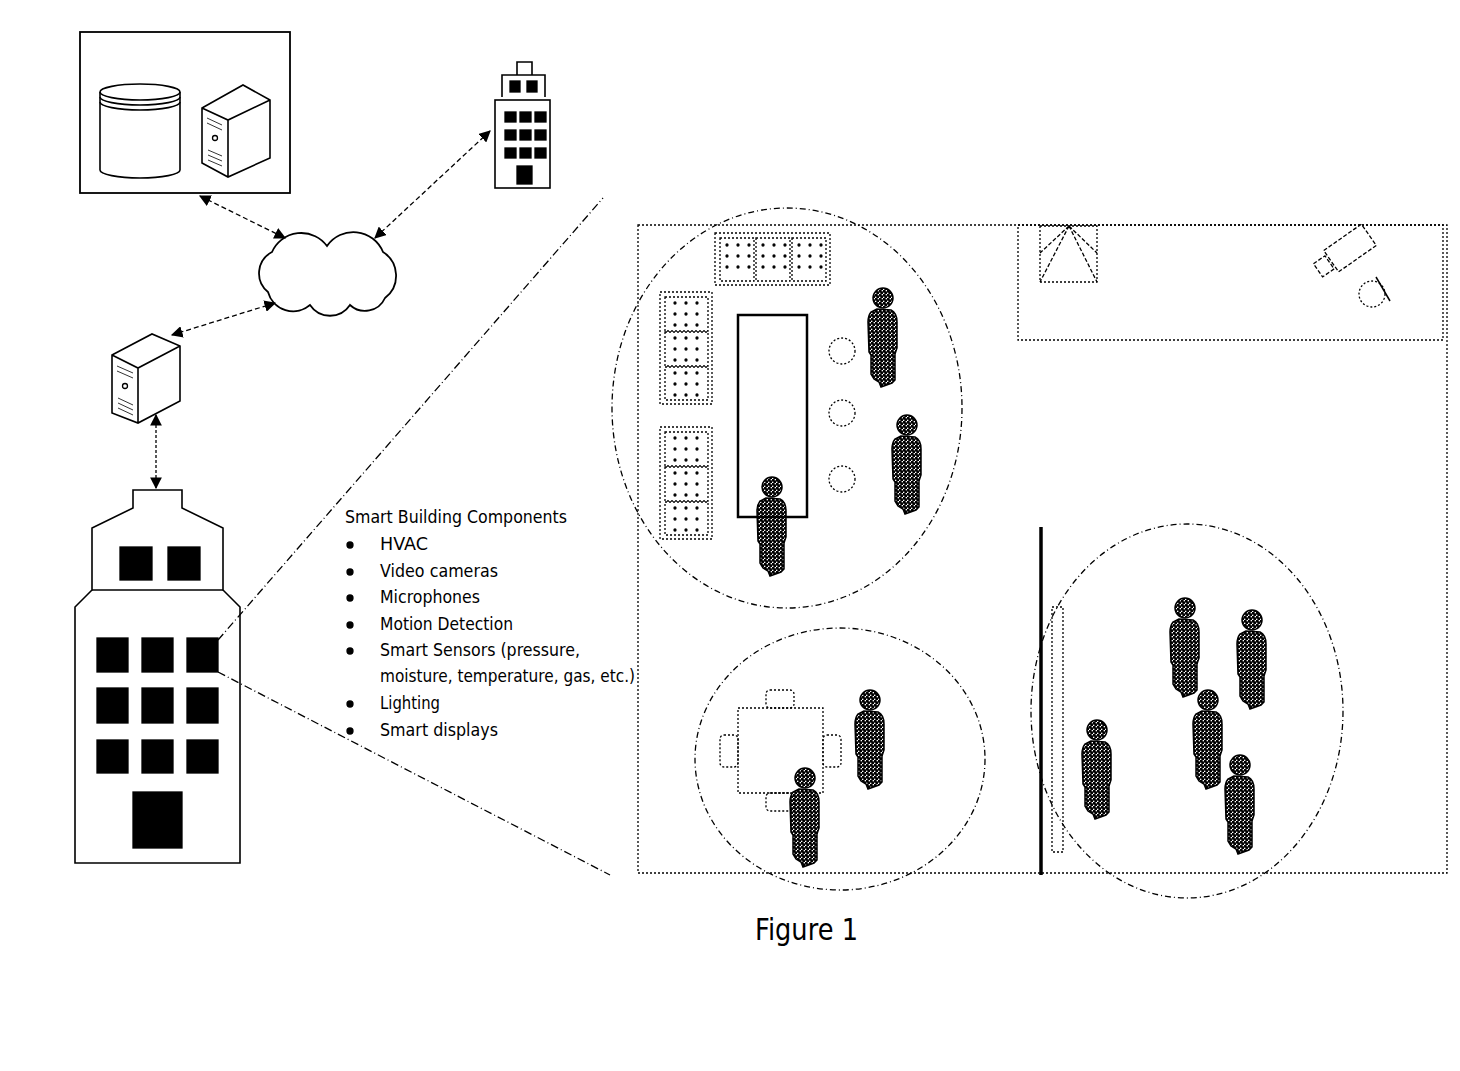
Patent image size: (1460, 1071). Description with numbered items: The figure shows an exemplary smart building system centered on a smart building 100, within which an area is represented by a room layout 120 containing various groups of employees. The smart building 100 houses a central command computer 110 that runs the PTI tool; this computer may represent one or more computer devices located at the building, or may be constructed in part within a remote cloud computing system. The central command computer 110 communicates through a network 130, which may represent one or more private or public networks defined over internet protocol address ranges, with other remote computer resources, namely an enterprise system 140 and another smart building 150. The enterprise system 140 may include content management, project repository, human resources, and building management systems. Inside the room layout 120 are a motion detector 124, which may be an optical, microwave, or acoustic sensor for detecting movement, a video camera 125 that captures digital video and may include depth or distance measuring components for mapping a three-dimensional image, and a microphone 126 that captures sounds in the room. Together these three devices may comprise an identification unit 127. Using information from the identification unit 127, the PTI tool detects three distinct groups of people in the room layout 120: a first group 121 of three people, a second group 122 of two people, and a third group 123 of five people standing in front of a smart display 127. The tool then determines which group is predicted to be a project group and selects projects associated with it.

The smart building 100 is at (175, 888).
The central command computer 110 is at (180, 388).
The room layout 120 is at (653, 228).
The first group 121 is at (962, 394).
The second group 122 is at (895, 643).
The third group 123 is at (1224, 536).
The motion detector 124 is at (1097, 260).
The video camera 125 is at (1377, 257).
The microphone 126 is at (1383, 295).
The identification unit 127 is at (1063, 648).
The network 130 is at (327, 274).
The enterprise system 140 is at (185, 112).
The another smart building 150 is at (525, 60).